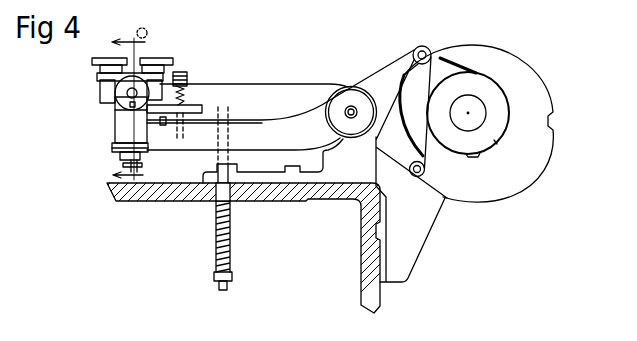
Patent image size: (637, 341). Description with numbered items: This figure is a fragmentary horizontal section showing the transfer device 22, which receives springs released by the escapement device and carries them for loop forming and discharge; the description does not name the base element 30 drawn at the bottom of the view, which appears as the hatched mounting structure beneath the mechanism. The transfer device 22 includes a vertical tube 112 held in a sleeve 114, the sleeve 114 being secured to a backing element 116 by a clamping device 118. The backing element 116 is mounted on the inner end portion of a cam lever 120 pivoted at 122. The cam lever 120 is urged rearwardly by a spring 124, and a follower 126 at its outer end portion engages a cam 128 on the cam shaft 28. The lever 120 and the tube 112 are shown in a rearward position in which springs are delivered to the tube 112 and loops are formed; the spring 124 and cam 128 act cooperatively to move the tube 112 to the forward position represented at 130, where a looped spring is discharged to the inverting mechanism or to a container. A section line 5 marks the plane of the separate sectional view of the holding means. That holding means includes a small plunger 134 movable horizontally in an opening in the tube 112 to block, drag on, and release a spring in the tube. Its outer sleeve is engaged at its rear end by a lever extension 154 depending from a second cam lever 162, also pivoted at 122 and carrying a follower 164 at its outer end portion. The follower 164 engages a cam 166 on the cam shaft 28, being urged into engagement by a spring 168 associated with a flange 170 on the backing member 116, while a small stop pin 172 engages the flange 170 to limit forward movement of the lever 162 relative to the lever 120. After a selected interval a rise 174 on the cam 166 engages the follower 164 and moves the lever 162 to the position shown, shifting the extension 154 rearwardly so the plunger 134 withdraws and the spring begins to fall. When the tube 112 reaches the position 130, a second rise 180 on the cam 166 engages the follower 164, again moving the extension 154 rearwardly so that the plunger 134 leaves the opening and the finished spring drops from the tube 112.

The section line 5- 5 is at (134, 109).
The transfer device 22 is at (43, 152).
The cam shaft 28 is at (480, 118).
The base plate 30 is at (173, 192).
The vertical tube 112 is at (116, 95).
The sleeve 114 is at (113, 92).
The backing element 116 is at (120, 117).
The clamping device 118 is at (179, 56).
The cam lever 120 is at (248, 92).
The pivot 122 is at (351, 106).
The spring 124 is at (233, 236).
The follower 126 is at (426, 174).
The cam 128 is at (478, 186).
The forward position 130 is at (141, 27).
The plunger 134 is at (132, 110).
The lever extension 154 is at (115, 153).
The cam lever 162 is at (247, 135).
The follower 164 is at (424, 46).
The cam 166 is at (490, 90).
The spring 168 is at (190, 92).
The flange 170 is at (197, 108).
The stop pin 172 is at (163, 125).
The rise 174 is at (460, 62).
The rise 180 is at (497, 145).